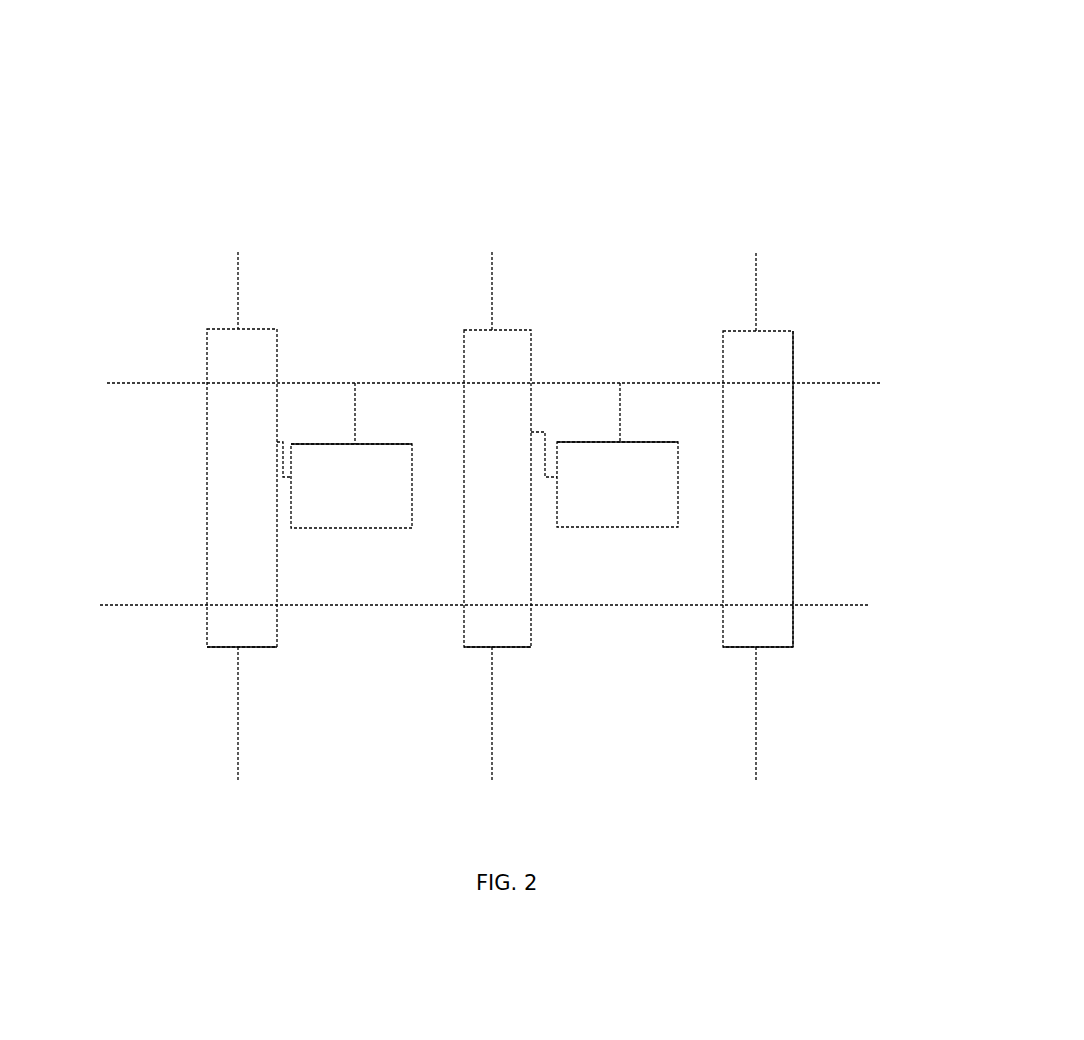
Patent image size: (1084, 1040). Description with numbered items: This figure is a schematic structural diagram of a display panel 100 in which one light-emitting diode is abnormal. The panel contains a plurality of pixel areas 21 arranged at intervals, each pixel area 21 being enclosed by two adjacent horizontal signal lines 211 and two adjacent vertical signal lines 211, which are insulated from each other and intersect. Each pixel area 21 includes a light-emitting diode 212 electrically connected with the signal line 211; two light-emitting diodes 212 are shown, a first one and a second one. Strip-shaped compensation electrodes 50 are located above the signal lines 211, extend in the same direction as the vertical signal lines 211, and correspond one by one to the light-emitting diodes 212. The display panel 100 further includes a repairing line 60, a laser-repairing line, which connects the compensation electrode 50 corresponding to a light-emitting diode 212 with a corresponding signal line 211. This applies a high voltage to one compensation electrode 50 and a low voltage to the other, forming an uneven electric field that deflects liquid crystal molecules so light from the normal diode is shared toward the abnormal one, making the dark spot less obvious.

The display panel 100 is at (572, 44).
The pixel area 21 is at (421, 433).
The compensation electrode 50 is at (233, 410).
The repairing line 60 is at (278, 458).
The signal line 211 is at (236, 733).
The light-emitting diode 212 is at (352, 503).